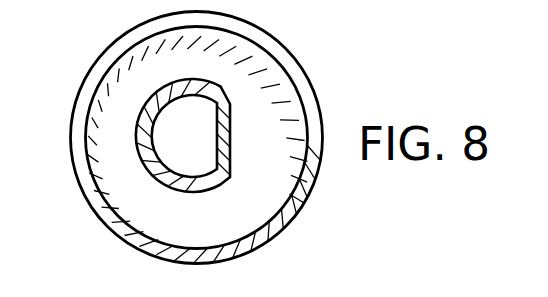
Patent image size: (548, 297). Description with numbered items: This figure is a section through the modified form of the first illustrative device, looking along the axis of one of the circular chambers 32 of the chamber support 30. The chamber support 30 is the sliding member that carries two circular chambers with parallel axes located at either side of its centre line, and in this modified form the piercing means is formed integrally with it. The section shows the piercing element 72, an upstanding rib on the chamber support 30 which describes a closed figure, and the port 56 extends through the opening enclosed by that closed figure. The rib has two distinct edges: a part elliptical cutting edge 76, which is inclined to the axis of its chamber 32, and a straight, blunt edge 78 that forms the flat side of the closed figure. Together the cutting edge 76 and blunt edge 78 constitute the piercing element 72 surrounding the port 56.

The chamber support 30 is at (374, 2).
The circular chamber 32 is at (238, 200).
The piercing element 72 is at (143, 100).
The part elliptical cutting edge 76 is at (152, 165).
The port 56 is at (207, 111).
The straight, blunt edge 78 is at (228, 139).